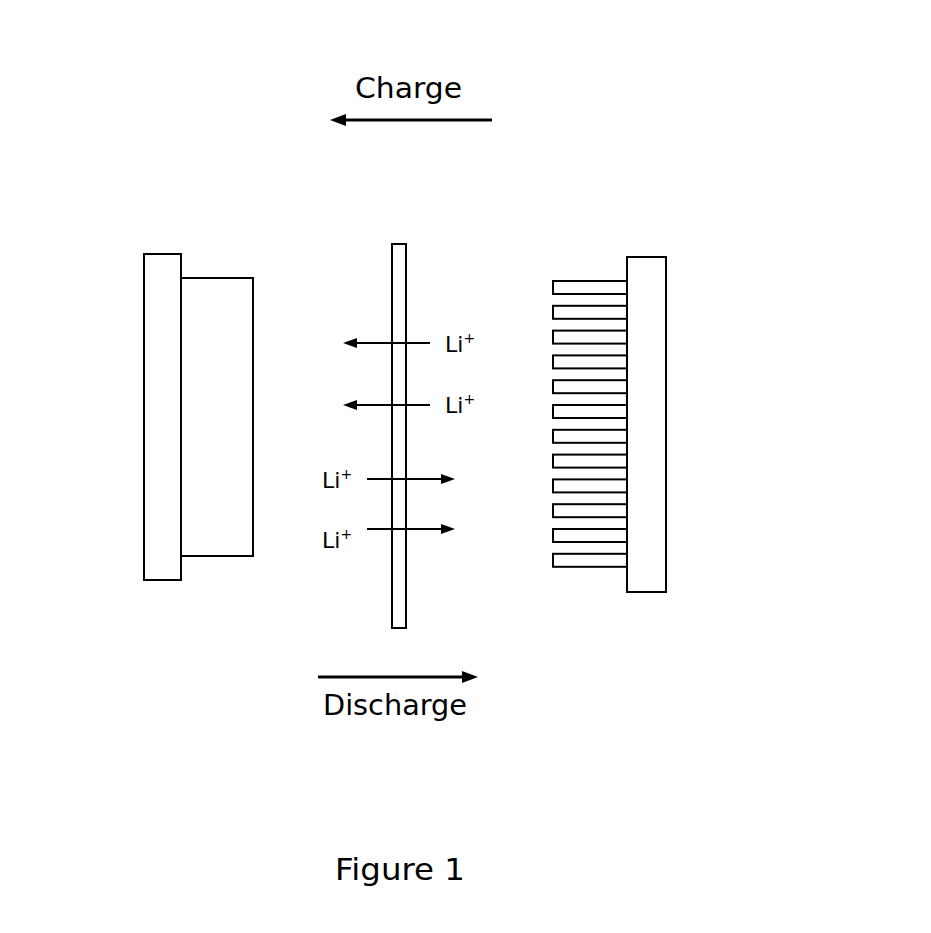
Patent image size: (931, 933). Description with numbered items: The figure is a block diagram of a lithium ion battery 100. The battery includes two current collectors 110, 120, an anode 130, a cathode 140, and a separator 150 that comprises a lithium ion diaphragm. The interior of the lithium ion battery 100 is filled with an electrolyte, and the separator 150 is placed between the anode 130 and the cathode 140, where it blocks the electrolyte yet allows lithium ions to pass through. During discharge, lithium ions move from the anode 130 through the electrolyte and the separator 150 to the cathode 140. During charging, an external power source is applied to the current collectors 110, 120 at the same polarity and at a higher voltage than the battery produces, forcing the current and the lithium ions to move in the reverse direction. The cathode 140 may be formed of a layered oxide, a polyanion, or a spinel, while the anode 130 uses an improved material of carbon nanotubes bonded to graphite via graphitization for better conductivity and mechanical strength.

The lithium ion battery 100 is at (609, 113).
The current collector 110 is at (157, 318).
The current collector 120 is at (652, 318).
The anode 130 is at (217, 302).
The cathode 140 is at (589, 270).
The separator 150 is at (396, 257).